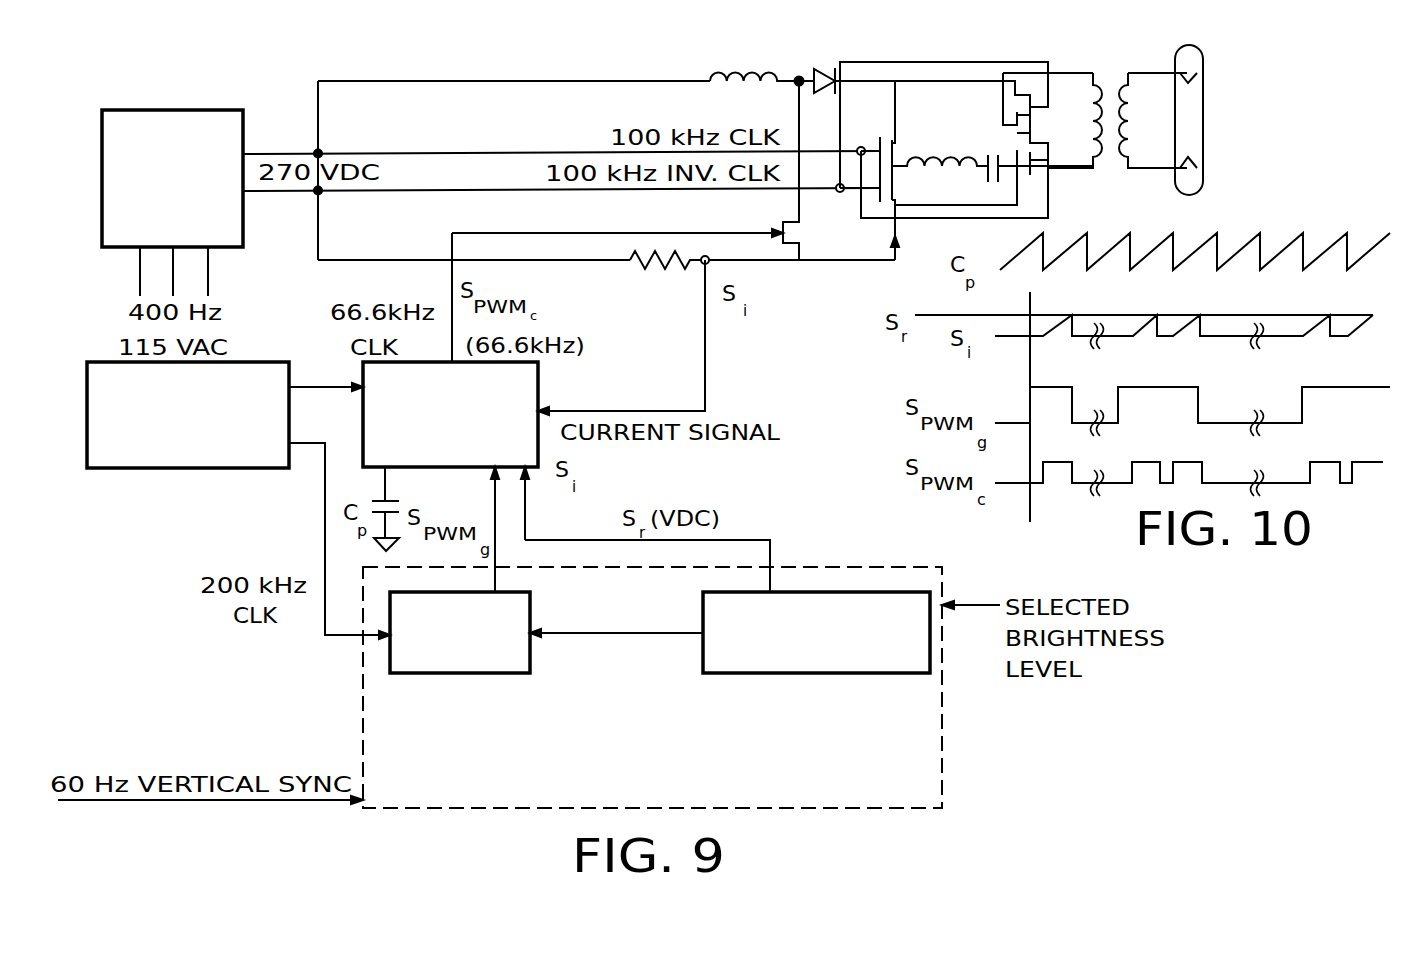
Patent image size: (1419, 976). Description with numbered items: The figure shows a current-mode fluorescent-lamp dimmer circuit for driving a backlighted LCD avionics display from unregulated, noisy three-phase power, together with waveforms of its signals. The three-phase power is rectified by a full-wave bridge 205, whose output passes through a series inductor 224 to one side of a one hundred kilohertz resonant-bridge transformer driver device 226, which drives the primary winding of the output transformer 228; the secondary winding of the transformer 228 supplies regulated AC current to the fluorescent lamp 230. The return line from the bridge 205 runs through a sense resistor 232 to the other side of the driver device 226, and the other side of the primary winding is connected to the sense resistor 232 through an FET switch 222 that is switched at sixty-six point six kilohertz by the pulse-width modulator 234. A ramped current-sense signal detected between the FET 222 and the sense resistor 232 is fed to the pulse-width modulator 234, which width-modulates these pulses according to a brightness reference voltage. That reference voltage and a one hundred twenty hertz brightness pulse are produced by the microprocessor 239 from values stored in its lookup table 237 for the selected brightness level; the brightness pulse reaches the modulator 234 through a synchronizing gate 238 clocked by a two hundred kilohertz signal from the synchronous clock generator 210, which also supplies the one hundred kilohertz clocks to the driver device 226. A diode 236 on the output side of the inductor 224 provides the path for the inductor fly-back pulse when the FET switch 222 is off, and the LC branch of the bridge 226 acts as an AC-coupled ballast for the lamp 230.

The full-wave bridge 205 is at (155, 110).
The synchronous clock generator 210 is at (243, 362).
The FET switch 222 is at (793, 220).
The series inductor 224 is at (731, 70).
The resonant-bridge transformer driver device 226 is at (975, 141).
The output transformer 228 is at (1128, 85).
The fluorescent lamp 230 is at (1190, 120).
The sense resistor 232 is at (672, 258).
The pulse-width modulator 234 is at (540, 395).
The diode 236 is at (823, 70).
The lookup table 237 is at (793, 666).
The synchronizing gate 238 is at (437, 666).
The microprocessor 239 is at (458, 797).